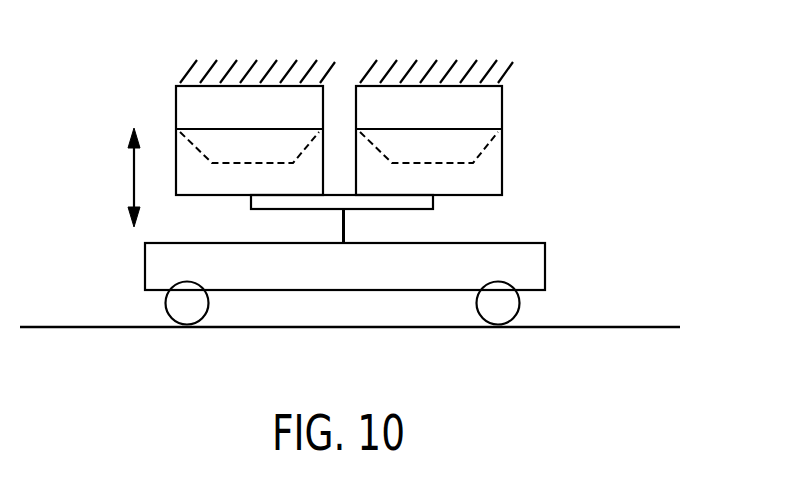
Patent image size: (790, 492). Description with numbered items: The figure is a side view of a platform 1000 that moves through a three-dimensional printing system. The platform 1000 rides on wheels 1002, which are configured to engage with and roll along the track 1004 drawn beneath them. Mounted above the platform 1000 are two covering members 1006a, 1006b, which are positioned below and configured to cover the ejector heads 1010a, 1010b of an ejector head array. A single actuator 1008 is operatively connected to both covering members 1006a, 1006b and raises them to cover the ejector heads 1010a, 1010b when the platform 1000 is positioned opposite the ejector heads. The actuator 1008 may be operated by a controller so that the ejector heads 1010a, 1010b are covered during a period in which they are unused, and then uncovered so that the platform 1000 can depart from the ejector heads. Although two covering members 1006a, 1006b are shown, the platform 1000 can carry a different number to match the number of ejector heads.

The platform 1000 is at (567, 242).
The wheels 1002 is at (209, 297).
The track 1004 is at (75, 327).
The covering member 1006a is at (503, 177).
The covering member 1006b is at (243, 196).
The actuator 1008 is at (363, 210).
The ejector head 1010a is at (372, 63).
The ejector head 1010b is at (193, 63).